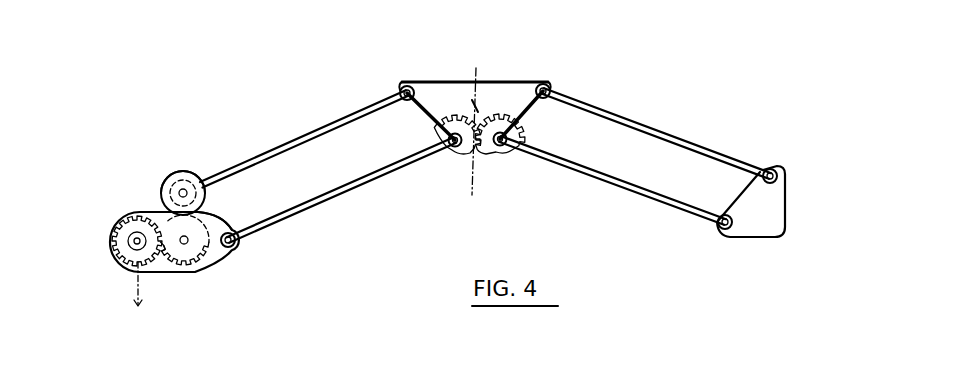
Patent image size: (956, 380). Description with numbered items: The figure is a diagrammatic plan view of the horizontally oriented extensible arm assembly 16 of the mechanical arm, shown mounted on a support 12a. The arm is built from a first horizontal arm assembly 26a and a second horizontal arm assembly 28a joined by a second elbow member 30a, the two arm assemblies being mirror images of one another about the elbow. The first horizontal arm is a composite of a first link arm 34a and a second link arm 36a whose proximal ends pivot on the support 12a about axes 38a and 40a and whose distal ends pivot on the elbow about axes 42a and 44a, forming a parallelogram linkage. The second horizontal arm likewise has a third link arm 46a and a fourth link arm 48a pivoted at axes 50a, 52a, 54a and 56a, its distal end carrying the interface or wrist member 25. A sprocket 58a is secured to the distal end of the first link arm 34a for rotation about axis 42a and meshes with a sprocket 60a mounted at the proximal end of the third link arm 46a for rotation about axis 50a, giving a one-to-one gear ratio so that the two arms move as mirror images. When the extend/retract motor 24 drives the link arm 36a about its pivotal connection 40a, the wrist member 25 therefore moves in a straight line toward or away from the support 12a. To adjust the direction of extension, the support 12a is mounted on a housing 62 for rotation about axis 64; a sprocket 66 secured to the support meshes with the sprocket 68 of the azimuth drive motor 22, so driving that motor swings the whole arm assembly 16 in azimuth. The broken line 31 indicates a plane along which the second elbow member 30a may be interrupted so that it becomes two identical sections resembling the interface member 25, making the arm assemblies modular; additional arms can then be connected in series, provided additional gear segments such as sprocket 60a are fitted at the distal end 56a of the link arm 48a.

The support 12a is at (207, 212).
The horizontal arm assembly 16 is at (300, 132).
The azimuth drive motor 22 is at (132, 240).
The extend/retract motor 24 is at (178, 171).
The interface member 25 is at (767, 210).
The first horizontal arm assembly 26a is at (341, 202).
The second horizontal arm assembly 28a is at (612, 201).
The second elbow member 30a is at (472, 100).
The broken line 31 is at (466, 146).
The first link arm 34a is at (324, 206).
The second link arm 36a is at (251, 157).
The axis 38a is at (240, 246).
The pivotal connection 40a is at (176, 194).
The axis 42a is at (453, 148).
The axis 44a is at (400, 90).
The third link arm 46a is at (677, 208).
The fourth link arm 48a is at (648, 129).
The axis 50a is at (503, 146).
The axis 52a is at (552, 77).
The axis 54a is at (720, 231).
The axis 56a is at (764, 168).
The sprocket 58a is at (450, 118).
The sprocket 60a is at (493, 118).
The housing 62 is at (163, 258).
The axis 64 is at (185, 246).
The sprocket 66 is at (201, 246).
The sprocket 68 is at (124, 271).